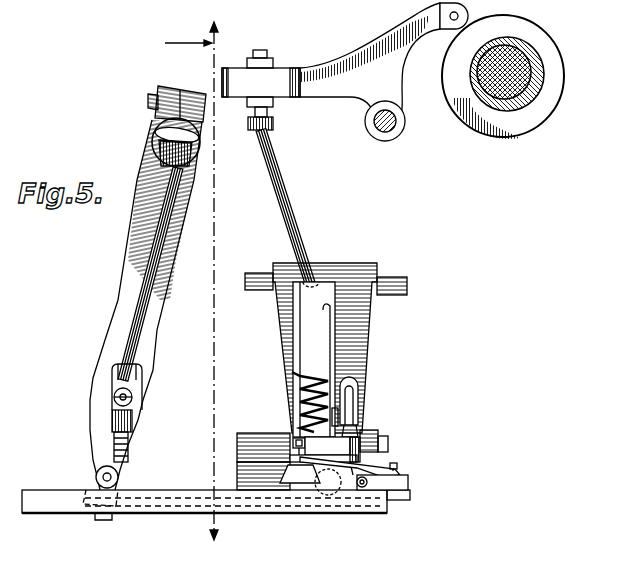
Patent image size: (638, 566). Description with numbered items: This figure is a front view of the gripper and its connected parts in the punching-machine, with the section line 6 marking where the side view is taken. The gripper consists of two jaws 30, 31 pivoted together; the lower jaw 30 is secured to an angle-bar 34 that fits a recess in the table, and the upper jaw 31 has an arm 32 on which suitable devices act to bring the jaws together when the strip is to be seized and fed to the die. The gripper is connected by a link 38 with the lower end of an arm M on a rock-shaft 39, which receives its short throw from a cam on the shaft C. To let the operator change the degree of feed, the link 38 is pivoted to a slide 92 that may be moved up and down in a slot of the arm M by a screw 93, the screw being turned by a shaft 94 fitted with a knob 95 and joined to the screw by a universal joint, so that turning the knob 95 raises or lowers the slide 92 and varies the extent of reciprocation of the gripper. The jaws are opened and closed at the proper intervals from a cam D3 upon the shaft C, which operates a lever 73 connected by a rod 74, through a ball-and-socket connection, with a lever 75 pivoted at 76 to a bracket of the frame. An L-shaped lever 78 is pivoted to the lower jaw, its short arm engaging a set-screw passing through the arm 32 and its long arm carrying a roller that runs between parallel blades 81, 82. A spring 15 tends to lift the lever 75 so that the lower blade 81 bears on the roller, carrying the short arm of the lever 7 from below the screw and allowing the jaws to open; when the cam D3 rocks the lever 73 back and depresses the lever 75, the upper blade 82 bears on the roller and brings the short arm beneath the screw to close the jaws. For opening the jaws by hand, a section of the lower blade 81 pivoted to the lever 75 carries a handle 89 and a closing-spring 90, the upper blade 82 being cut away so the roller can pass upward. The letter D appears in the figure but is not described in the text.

The section line 6 6 is at (196, 282).
The angle-bar 34 is at (172, 510).
The link 38 is at (270, 505).
The arm M is at (117, 332).
The shaft 94 is at (146, 302).
The rock-shaft 39 is at (162, 141).
The knob 95 is at (195, 142).
The screw 93 is at (132, 447).
The slide 92 is at (98, 470).
The lever 73 is at (331, 72).
The cam D3 is at (481, 134).
The shaft C is at (525, 78).
The rod 74 is at (288, 207).
The lever 75 is at (338, 350).
The pivot 76 is at (250, 274).
The spring 15 is at (297, 392).
The handle 89 is at (360, 395).
The closing-spring 90 is at (352, 423).
The upper blade 82 is at (252, 447).
The lower blade 81 is at (250, 472).
The arm 32 is at (296, 452).
The bracket D is at (379, 446).
The L-shaped lever 78 is at (302, 484).
The lever 7 is at (348, 464).
The upper jaw 31 is at (398, 468).
The lower jaw 30 is at (408, 486).